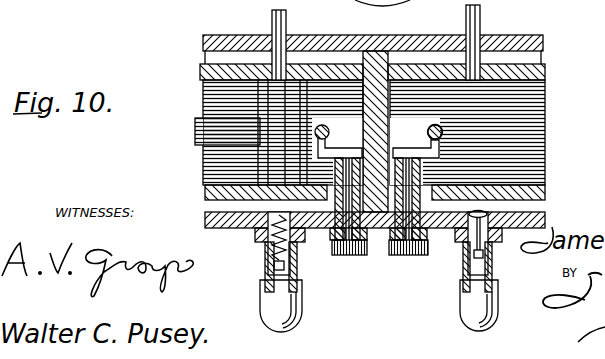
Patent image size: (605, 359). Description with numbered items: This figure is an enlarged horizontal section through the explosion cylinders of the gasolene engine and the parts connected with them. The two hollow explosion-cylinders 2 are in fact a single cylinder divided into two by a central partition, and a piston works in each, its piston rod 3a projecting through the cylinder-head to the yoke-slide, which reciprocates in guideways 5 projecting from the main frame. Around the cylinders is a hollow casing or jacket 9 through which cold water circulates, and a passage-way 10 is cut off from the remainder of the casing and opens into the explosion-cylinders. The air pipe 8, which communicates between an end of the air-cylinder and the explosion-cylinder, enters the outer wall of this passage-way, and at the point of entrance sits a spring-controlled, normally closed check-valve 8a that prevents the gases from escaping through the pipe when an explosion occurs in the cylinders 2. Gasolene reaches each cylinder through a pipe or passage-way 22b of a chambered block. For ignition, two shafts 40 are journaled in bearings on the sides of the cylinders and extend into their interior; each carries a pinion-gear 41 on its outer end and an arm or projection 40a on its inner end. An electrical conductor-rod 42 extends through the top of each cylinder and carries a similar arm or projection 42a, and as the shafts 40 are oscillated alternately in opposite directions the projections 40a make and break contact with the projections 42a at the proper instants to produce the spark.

The explosion-cylinder 2 is at (210, 163).
The piston rod 3a is at (195, 134).
The guideways 5 is at (282, 132).
The pipe 8 is at (262, 308).
The check-valve 8a is at (378, 235).
The casing or jacket 9 is at (332, 40).
The passage-way 10 is at (318, 205).
The pipes or passage-ways 22b is at (504, 17).
The shafts 40 is at (380, 228).
The arm or projection 40a is at (443, 113).
The pinion-gear 41 is at (344, 256).
The electrical conductor-rod 42 is at (443, 131).
The arm or projection 42a is at (440, 142).